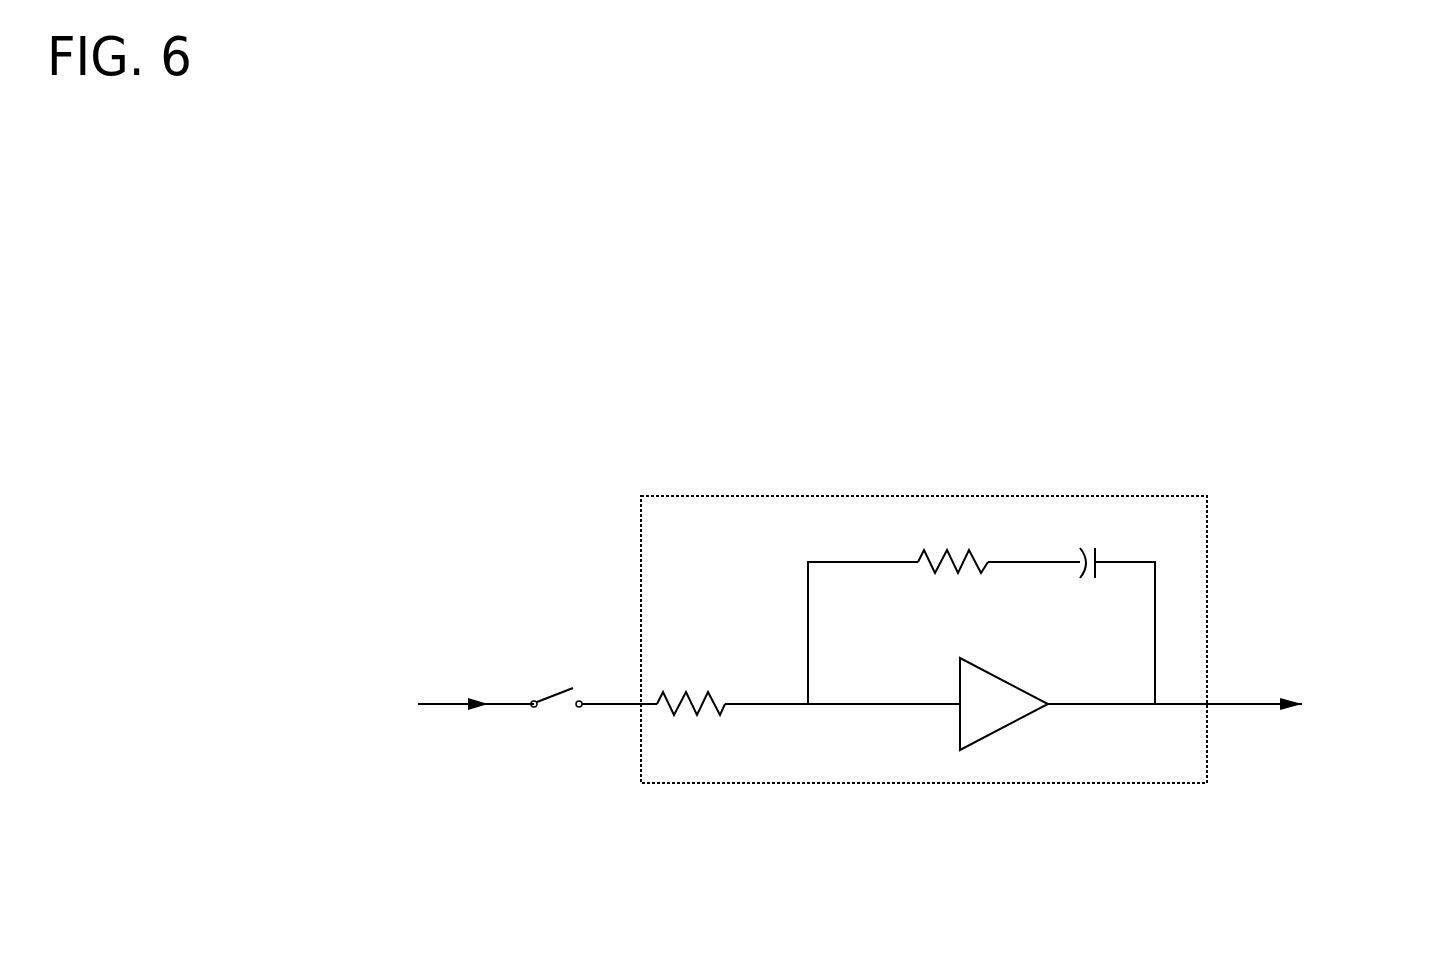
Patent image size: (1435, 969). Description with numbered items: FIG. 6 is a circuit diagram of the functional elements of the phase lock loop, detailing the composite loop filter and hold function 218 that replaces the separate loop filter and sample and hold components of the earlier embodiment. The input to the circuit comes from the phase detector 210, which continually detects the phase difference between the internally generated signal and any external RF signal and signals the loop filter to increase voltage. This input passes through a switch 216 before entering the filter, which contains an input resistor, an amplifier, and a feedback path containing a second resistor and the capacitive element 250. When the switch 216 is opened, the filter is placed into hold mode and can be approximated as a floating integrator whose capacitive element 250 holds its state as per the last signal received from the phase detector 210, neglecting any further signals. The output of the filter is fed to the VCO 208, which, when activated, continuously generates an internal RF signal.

The phase detector 210 is at (413, 603).
The switch 216 is at (550, 710).
The composite loop filter and hold function 218 is at (928, 631).
The capacitive element C1 250 is at (1040, 548).
The VCO 208 is at (1333, 653).